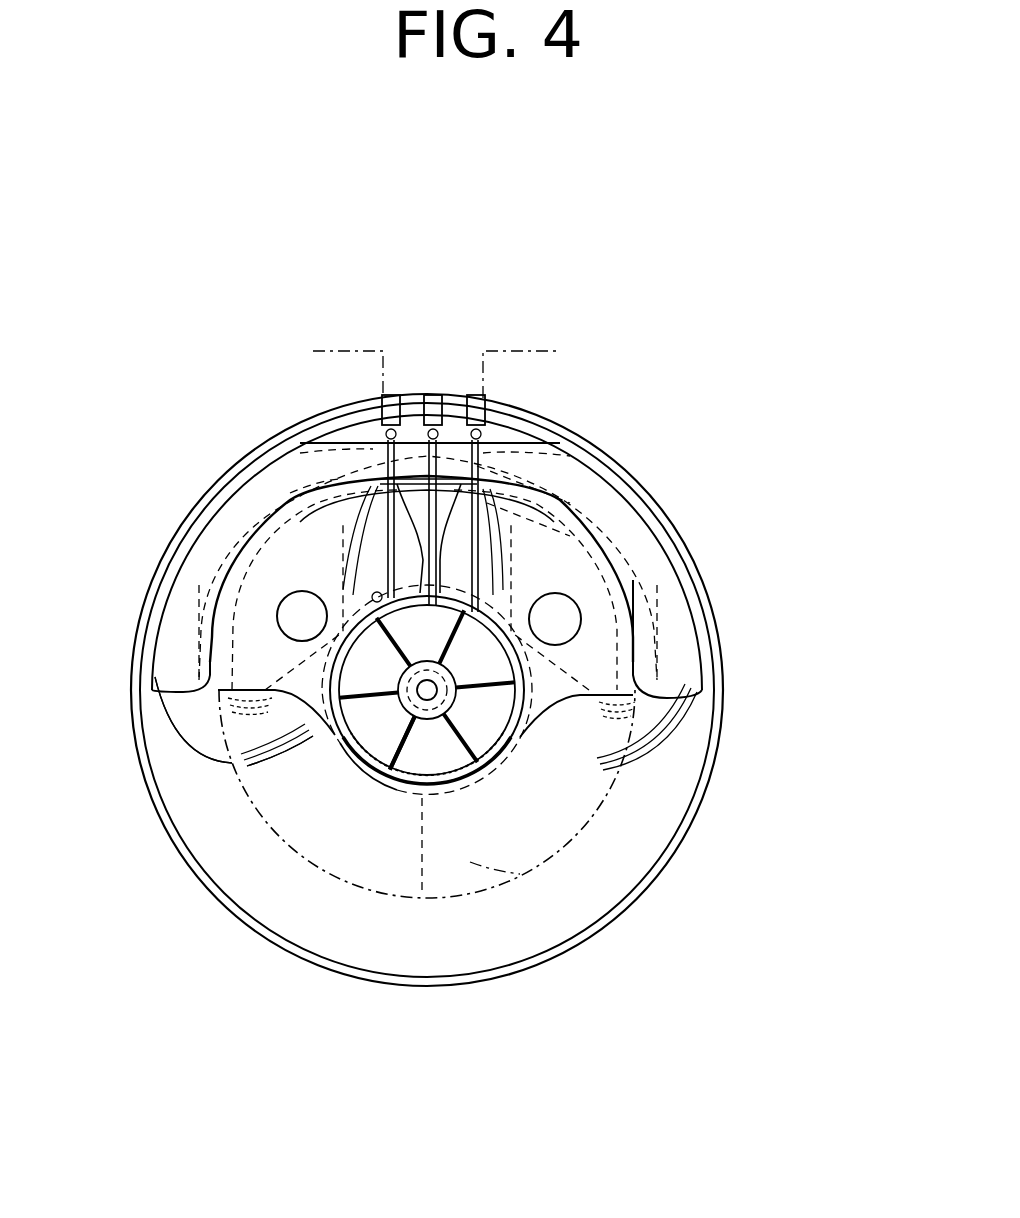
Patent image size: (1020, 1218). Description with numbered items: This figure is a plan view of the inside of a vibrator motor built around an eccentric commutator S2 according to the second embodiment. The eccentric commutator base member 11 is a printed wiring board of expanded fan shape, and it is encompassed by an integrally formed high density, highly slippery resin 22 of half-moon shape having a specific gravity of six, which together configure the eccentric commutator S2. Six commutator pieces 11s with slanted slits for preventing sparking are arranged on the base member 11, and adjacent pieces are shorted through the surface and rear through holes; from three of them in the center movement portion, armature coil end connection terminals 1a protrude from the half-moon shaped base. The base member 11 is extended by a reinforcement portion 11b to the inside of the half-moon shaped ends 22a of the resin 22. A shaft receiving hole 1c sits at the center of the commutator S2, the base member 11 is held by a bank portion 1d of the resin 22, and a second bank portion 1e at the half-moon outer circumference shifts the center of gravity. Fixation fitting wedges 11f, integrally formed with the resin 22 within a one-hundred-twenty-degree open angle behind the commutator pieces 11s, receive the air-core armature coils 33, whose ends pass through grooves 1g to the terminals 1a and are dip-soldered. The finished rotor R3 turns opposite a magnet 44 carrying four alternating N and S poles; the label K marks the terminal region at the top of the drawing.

The eccentric commutator base member 11 is at (522, 692).
The reinforcement portion 11b is at (650, 620).
The air-core armature coil position determination fixation fitting wedges 11f is at (307, 550).
The commutator pieces 11s is at (449, 790).
The armature coil end connection terminals 1a is at (418, 398).
The shaft receiving hole 1c is at (372, 775).
The bank portion 1d is at (403, 778).
The second bank portion 1e is at (560, 478).
The grooves 1g is at (372, 503).
The terminal block K is at (512, 352).
The high density, highly slippery resin 22 is at (96, 672).
The half-moon shaped ends 22a is at (186, 690).
The air-core armature coils 33 is at (230, 763).
The magnet 44 is at (357, 863).
The eccentric commutator S2 is at (83, 573).
The rotor assembly R3 is at (903, 677).